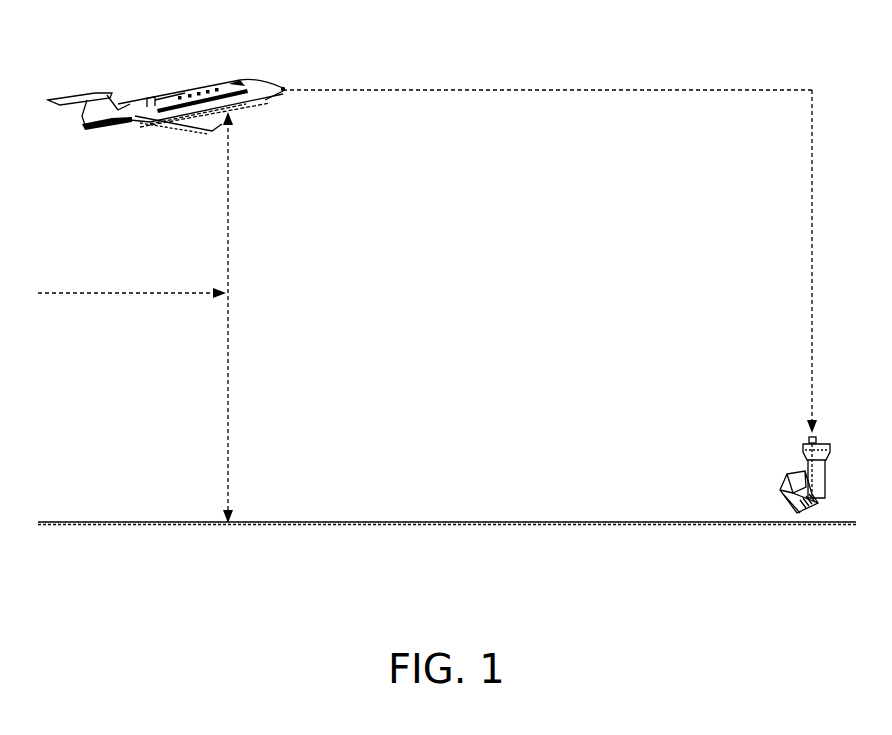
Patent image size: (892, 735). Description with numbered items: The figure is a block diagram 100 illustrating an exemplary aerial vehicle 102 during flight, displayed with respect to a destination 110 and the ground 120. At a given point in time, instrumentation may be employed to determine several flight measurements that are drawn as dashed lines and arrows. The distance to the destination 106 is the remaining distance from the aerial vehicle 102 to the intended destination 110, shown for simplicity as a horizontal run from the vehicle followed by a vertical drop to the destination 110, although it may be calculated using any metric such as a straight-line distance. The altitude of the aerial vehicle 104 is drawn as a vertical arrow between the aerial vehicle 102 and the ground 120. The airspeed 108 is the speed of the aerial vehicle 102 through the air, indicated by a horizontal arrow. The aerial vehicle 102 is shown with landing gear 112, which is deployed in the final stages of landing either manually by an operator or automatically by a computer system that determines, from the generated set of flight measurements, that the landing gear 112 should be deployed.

The block diagram 100 is at (773, 556).
The aerial vehicle 102 is at (228, 75).
The altitude of the aerial vehicle 104 is at (227, 218).
The distance to the destination 106 is at (387, 90).
The airspeed 108 is at (98, 292).
The destination 110 is at (780, 488).
The landing gear 112 is at (197, 112).
The ground 120 is at (98, 522).